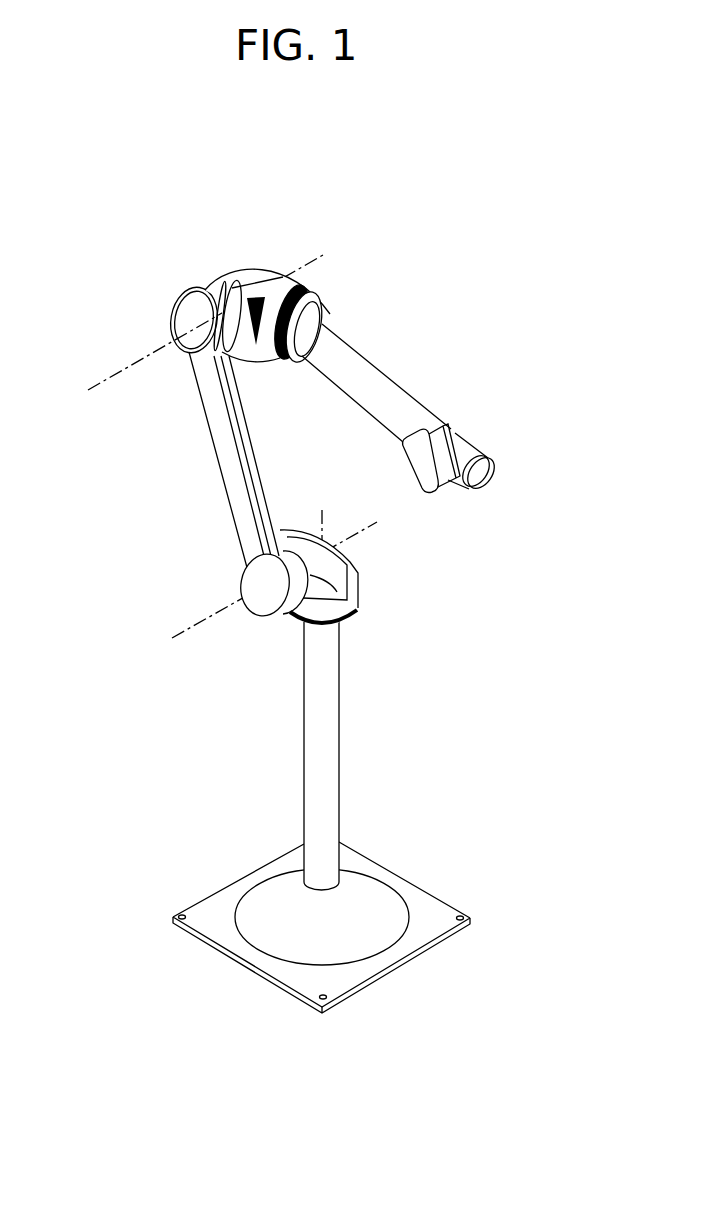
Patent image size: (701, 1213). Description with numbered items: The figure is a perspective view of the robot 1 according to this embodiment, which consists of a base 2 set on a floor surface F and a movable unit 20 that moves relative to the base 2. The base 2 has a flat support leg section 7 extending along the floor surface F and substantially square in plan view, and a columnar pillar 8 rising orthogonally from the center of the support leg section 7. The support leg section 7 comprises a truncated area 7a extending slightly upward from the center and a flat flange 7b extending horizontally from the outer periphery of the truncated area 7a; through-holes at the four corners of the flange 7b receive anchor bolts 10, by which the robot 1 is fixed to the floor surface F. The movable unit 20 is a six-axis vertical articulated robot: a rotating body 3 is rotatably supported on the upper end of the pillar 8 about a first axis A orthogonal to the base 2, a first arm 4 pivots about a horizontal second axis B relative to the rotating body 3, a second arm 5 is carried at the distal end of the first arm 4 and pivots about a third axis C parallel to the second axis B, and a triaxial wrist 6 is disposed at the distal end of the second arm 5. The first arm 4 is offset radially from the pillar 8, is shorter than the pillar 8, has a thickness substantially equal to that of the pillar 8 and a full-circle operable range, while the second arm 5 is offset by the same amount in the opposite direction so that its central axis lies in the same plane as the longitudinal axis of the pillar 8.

The robot 1 is at (46, 226).
The base 2 is at (232, 860).
The rotating body 3 is at (356, 598).
The first arm 4 is at (208, 460).
The second arm 5 is at (260, 254).
The triaxial wrist 6 is at (497, 490).
The support leg section 7 is at (211, 900).
The truncated area 7a is at (363, 892).
The flange 7b is at (427, 915).
The pillar 8 is at (304, 762).
The anchor bolt 10 is at (340, 990).
The movable unit 20 is at (178, 284).
The first axis A is at (322, 718).
The second axis B is at (202, 620).
The third axis C is at (118, 372).
The floor surface F is at (120, 943).